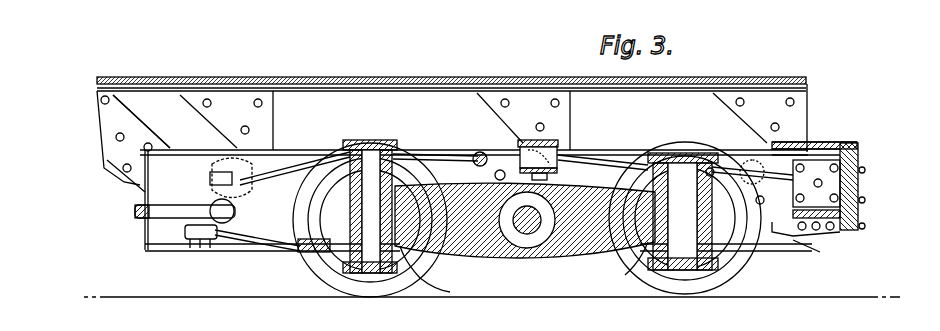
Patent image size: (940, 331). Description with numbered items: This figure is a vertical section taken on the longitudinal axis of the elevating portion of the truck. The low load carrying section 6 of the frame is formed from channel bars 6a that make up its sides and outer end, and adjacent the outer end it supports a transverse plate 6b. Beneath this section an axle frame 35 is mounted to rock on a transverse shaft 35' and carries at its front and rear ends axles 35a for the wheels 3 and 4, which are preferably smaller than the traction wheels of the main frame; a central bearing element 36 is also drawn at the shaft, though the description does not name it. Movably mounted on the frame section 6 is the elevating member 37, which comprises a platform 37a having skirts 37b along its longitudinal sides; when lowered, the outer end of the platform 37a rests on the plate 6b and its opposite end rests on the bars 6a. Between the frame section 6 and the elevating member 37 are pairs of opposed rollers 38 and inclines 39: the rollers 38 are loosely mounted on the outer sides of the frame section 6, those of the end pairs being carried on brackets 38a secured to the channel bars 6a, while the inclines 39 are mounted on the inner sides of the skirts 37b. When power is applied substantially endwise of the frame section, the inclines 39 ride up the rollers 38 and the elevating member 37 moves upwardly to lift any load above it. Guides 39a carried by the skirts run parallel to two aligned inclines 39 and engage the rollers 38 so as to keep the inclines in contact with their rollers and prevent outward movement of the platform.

The wheel 3 is at (360, 290).
The wheel 4 is at (546, 213).
The load carrying section 6 is at (150, 249).
The channel bars 6a is at (858, 183).
The transverse plate 6b is at (820, 143).
The axle frame 35 is at (525, 236).
The transverse shaft 35' is at (527, 241).
The axles 35a is at (400, 290).
The center bearing 36 is at (520, 141).
The elevating member 37 is at (451, 70).
The platform 37a is at (522, 77).
The skirts 37b is at (350, 100).
The rollers 38 is at (227, 148).
The brackets 38a is at (478, 170).
The inclines 39 is at (180, 102).
The guides 39a is at (196, 118).